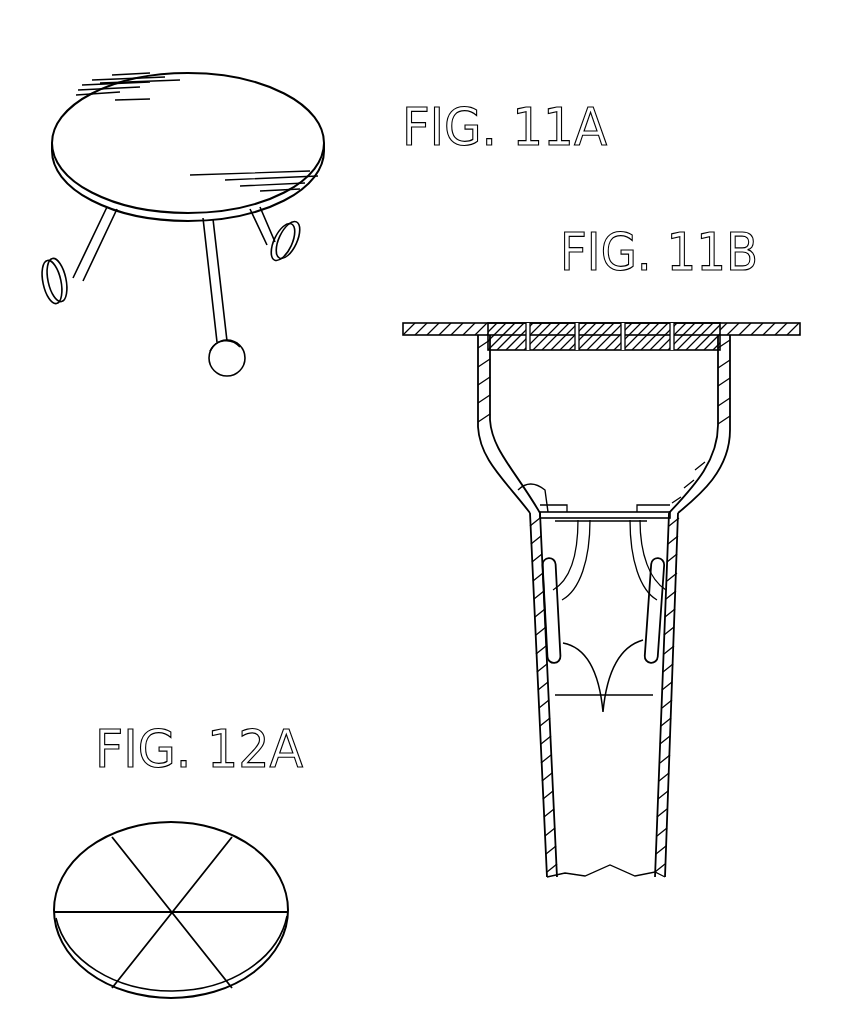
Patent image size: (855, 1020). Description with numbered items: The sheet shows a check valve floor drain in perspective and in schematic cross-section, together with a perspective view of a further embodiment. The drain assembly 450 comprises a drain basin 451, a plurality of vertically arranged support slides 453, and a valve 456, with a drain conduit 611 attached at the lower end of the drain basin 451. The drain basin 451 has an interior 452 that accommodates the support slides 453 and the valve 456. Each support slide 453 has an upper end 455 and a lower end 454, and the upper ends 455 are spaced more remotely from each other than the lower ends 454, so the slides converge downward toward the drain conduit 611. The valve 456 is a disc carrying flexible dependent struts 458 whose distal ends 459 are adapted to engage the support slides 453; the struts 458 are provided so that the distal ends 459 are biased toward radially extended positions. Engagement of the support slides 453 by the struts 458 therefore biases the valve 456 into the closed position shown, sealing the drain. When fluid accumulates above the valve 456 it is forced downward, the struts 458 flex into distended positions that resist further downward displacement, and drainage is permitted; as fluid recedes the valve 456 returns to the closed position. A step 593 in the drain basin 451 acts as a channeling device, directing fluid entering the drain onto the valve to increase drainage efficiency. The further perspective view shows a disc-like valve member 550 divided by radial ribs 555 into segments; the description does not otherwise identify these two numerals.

In FIG. 11B, the drain assembly 450 is at (752, 313).
In FIG. 11B, the drain basin 451 is at (687, 420).
In FIG. 11B, the interior 452 is at (629, 628).
In FIG. 11B, the support slides 453 is at (604, 718).
In FIG. 11B, the lower ends 454 is at (650, 663).
In FIG. 11B, the upper ends 455 is at (653, 555).
In FIG. 11A, the valve 456 is at (280, 103).
In FIG. 11B, the valve 456 is at (603, 510).
In FIG. 11A, the flexible dependent struts 458 is at (263, 220).
In FIG. 11B, the flexible dependent struts 458 is at (577, 548).
In FIG. 11A, the distal ends 459 is at (237, 357).
In FIG. 11B, the step 593 is at (523, 487).
In FIG. 11B, the drain conduit 611 is at (663, 810).
In FIG. 12A, the strainer plate 550 is at (313, 882).
In FIG. 12A, the rib 555 is at (243, 873).